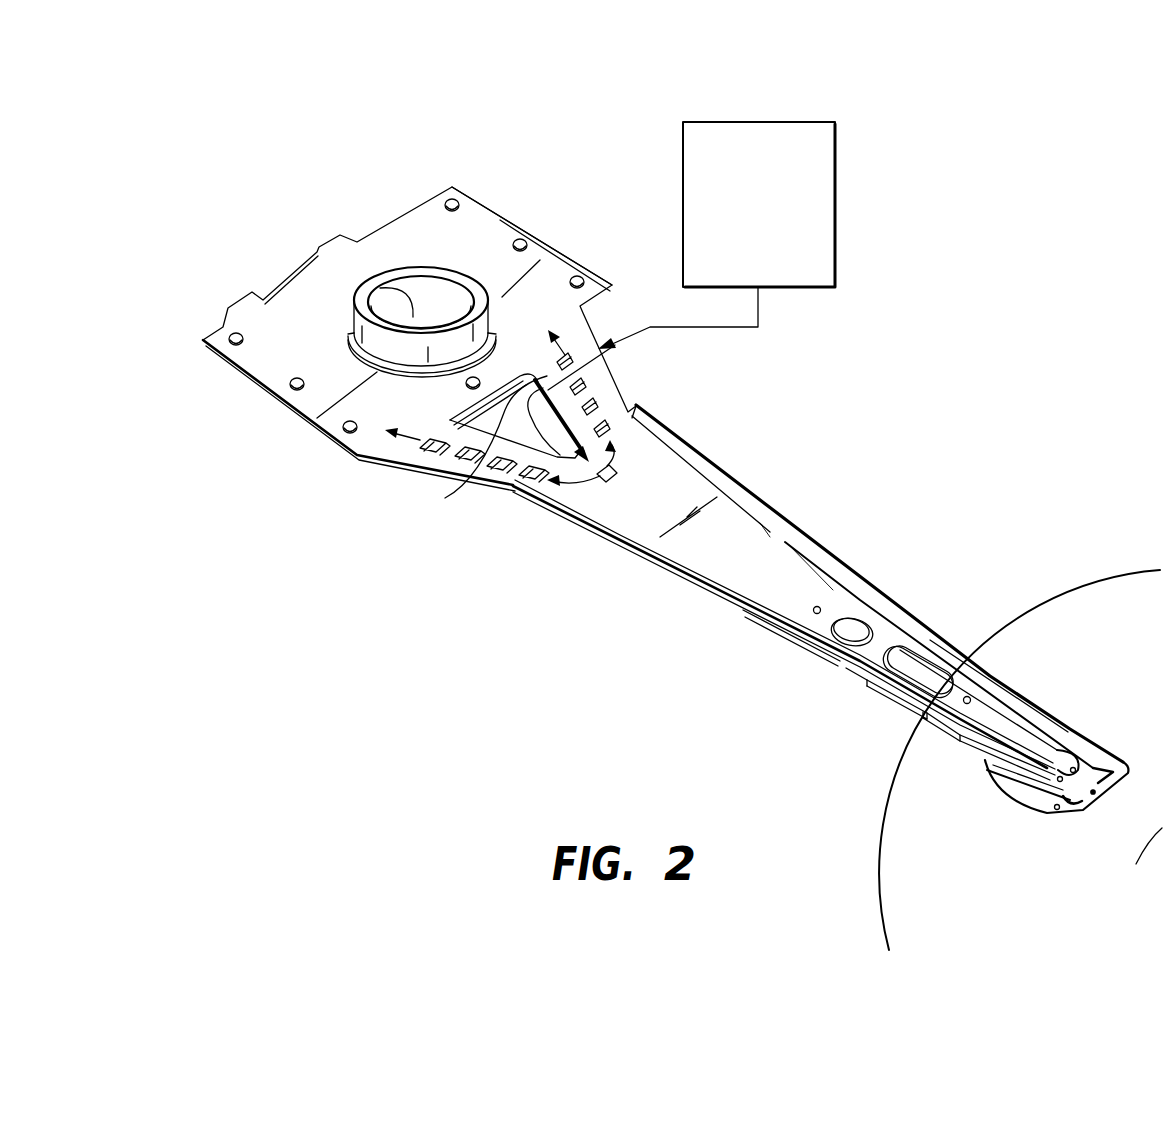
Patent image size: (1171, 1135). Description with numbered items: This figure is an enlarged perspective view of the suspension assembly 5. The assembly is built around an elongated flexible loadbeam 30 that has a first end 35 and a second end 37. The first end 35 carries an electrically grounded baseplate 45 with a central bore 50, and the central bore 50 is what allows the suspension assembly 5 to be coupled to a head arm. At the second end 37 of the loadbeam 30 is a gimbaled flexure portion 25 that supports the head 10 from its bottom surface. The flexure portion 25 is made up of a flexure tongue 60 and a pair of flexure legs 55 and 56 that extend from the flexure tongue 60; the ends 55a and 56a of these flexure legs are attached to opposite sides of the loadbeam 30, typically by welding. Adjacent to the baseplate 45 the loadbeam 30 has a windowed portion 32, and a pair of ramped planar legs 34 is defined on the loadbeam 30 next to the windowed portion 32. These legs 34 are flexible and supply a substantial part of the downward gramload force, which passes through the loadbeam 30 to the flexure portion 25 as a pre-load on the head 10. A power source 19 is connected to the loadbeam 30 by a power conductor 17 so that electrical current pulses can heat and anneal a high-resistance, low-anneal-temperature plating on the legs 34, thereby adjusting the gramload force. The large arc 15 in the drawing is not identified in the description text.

The suspension assembly 5 is at (450, 585).
The head 10 is at (1072, 812).
The disk 15 is at (1133, 612).
The power conductor 17 is at (634, 333).
The power source 19 is at (728, 122).
The gimbaled flexure portion 25 is at (1083, 694).
The elongated flexible loadbeam 30 is at (835, 592).
The windowed portion 32 is at (542, 440).
The ramped planar legs 34 is at (472, 466).
The first end 35 is at (294, 249).
The second end 37 is at (1057, 745).
The electrically grounded baseplate 45 is at (497, 212).
The central bore 50 is at (350, 300).
The flexure leg 55 is at (993, 775).
The end of flexure leg 55a is at (918, 737).
The flexure leg 56 is at (1088, 740).
The end of flexure leg 56a is at (1005, 667).
The flexure tongue 60 is at (1092, 790).